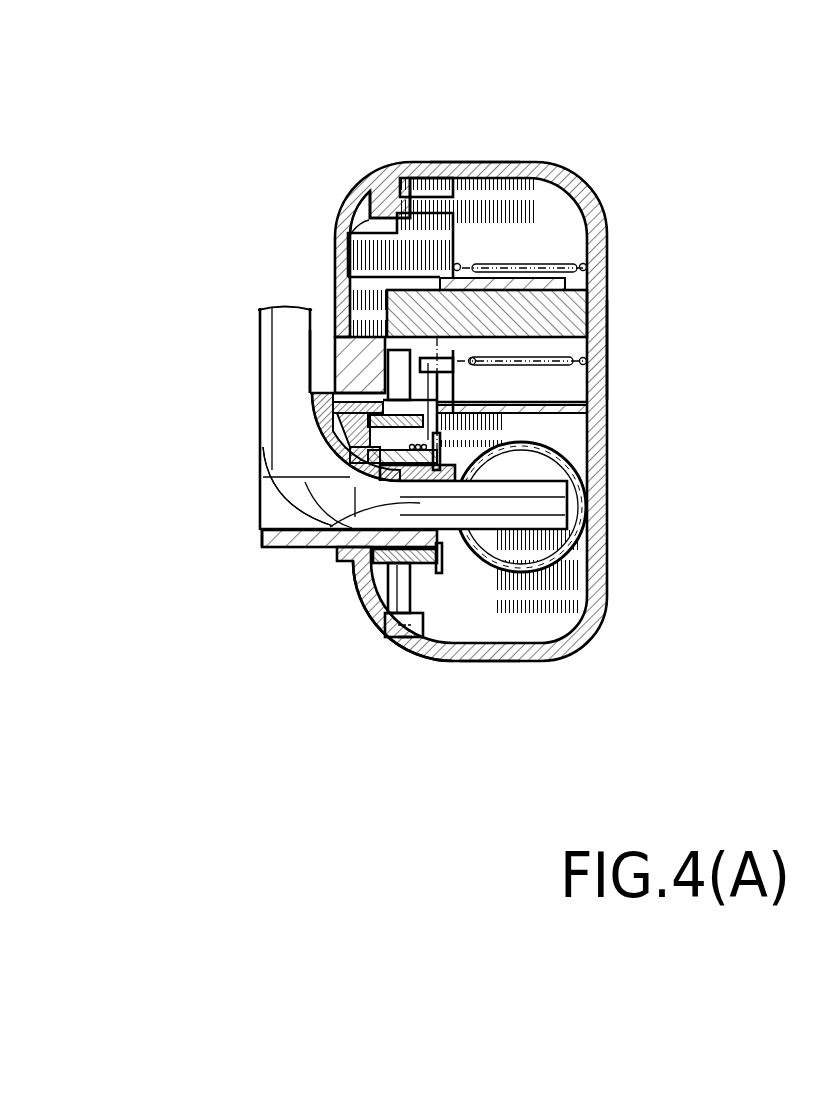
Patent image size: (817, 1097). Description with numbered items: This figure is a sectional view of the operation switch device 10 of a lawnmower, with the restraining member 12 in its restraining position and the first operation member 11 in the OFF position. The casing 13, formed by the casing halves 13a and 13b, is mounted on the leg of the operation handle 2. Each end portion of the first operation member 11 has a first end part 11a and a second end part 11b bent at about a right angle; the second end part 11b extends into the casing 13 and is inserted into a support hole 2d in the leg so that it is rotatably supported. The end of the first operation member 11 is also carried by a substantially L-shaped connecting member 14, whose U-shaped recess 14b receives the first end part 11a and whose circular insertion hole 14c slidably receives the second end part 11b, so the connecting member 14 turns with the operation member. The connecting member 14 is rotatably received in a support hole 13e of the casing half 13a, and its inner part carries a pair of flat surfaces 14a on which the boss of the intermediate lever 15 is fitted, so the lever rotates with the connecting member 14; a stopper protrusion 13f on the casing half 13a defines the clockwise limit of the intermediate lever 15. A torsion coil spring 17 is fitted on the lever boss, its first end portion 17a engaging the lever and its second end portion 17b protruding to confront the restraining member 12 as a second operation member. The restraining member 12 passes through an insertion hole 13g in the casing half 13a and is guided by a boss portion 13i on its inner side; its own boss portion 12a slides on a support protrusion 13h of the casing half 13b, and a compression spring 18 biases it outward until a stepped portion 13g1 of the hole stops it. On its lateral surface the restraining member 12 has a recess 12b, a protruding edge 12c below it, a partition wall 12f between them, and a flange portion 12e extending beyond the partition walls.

The operation handle 2 is at (575, 615).
The support hole 2d is at (562, 510).
The operation switch device 10 is at (430, 122).
The first operation member 11 is at (256, 332).
The first end part 11a is at (318, 393).
The second end part 11b is at (552, 620).
The restraining member 12 is at (348, 265).
The boss portion 12a is at (560, 380).
The recess 12b is at (350, 345).
The protruding edge 12c is at (555, 395).
The flange portion 12e is at (345, 410).
The partition wall 12f is at (580, 425).
The casing 13 is at (640, 90).
The casing half 13a is at (455, 162).
The casing half 13b is at (577, 190).
The support hole 13e is at (323, 562).
The stopper protrusion 13f is at (440, 655).
The insertion hole 13g is at (340, 228).
The stepped portion 13g1 is at (390, 205).
The support protrusion 13h is at (545, 315).
The boss portion 13i is at (395, 452).
The connecting member 14 is at (300, 555).
The flat surfaces 14a is at (420, 500).
The U-shaped recess 14b is at (330, 420).
The circular insertion hole 14c is at (420, 508).
The intermediate lever 15 is at (378, 612).
The torsion coil spring 17 is at (450, 612).
The first end portion 17a is at (425, 637).
The second end portion 17b is at (540, 460).
The compression spring 18 is at (520, 268).